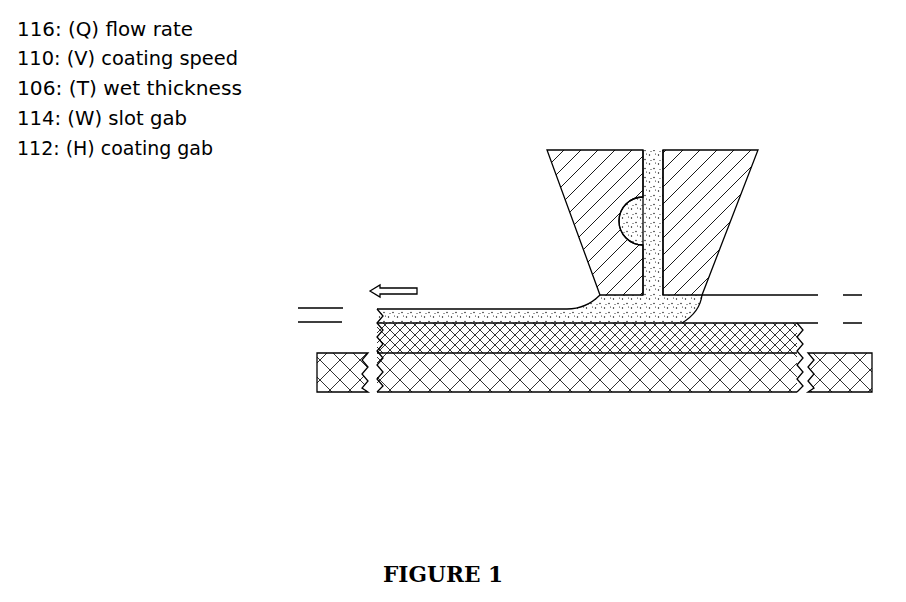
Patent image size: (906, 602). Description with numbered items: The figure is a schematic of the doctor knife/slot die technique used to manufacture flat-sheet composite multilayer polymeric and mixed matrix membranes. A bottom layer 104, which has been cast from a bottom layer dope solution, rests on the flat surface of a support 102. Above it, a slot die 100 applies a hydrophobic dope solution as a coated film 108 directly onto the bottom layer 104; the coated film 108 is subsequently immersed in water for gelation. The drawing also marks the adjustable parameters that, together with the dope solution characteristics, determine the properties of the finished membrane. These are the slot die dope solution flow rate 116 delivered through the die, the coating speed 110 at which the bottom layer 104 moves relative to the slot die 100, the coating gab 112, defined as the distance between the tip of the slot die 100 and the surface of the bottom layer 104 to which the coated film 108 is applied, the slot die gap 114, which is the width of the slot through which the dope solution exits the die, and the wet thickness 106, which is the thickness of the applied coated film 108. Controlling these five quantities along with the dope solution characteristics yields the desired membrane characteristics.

The slot die 100 is at (700, 150).
The support 102 is at (547, 370).
The bottom layer 104 is at (692, 333).
The wet thickness 106 is at (298, 283).
The coated film 108 is at (525, 307).
The coating speed 110 is at (393, 279).
The coating gab 112 is at (848, 270).
The slot die gap 114 is at (690, 265).
The slot die dope solution flow rate 116 is at (631, 221).